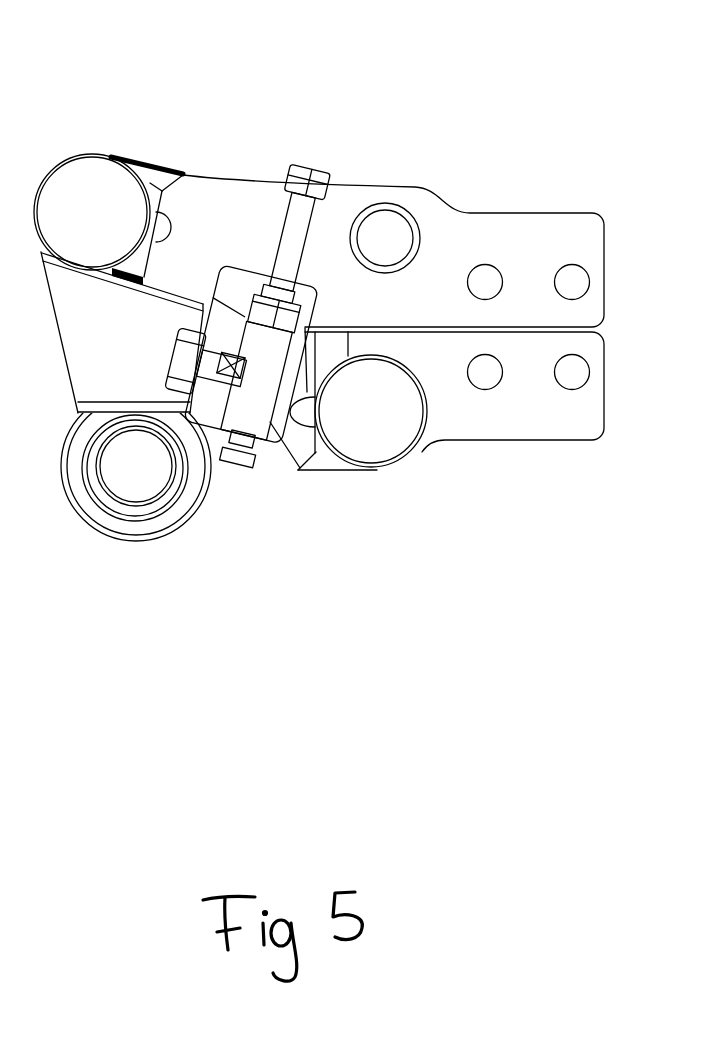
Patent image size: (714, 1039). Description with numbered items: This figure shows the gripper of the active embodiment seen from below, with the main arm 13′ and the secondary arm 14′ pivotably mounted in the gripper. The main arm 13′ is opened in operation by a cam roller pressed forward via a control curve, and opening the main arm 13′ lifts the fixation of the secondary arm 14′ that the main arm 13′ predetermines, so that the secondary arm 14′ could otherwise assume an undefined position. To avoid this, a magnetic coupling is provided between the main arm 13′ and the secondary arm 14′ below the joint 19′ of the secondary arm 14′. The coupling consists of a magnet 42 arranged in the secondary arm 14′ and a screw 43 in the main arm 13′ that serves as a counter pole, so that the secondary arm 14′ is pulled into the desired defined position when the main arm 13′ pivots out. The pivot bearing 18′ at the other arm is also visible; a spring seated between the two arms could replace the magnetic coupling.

The main arm 13′ is at (525, 425).
The secondary arm 14′ is at (506, 235).
The first pivot bushing 18′ is at (90, 178).
The joint 19′ is at (353, 440).
The magnet 42 is at (290, 205).
The screw 43 is at (253, 415).